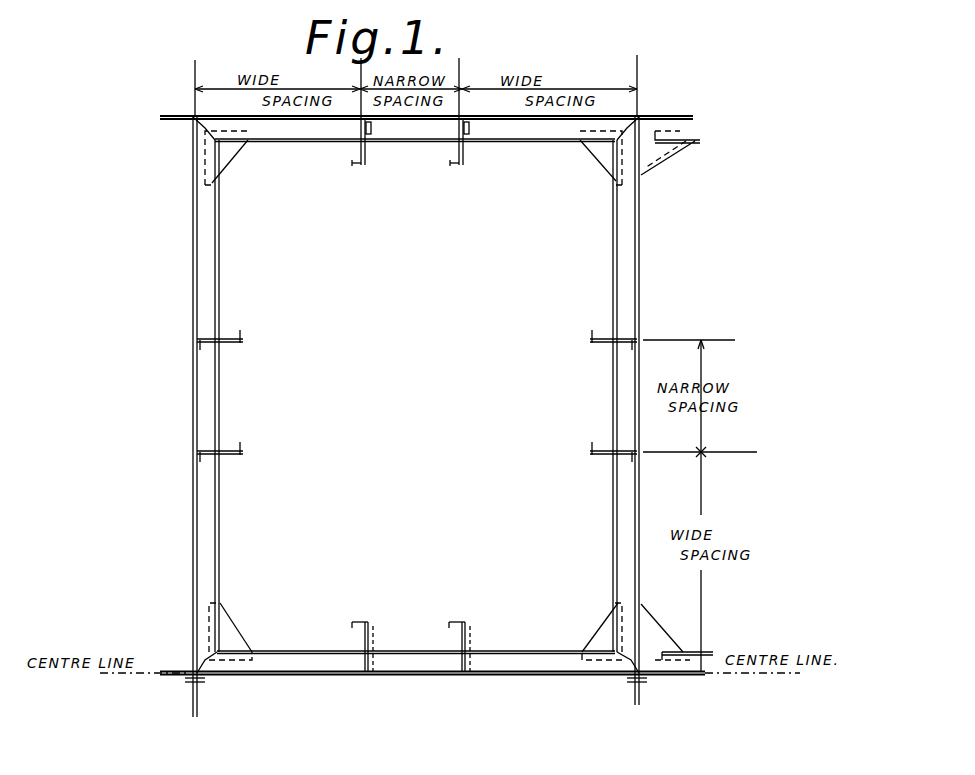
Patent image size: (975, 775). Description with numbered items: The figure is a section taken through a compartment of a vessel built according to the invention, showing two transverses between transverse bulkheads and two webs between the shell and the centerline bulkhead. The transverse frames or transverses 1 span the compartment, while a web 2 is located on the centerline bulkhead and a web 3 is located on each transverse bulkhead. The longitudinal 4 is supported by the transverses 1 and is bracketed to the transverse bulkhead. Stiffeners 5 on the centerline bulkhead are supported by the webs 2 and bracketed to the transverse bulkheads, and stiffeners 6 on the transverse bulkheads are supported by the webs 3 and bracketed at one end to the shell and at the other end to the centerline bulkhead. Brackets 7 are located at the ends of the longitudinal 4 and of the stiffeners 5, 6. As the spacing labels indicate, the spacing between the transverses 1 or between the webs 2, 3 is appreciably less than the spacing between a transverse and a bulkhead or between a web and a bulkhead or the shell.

The transverse frames 1 is at (360, 148).
The web on the center line bulkhead 2 is at (352, 640).
The web on the transverse bulkhead 3 is at (229, 342).
The longitudinal 4 is at (297, 136).
The stiffeners on the centerline of the bulkhead 5 is at (511, 656).
The stiffeners on the transverse bulkheads 6 is at (219, 412).
The brackets 7 is at (248, 161).